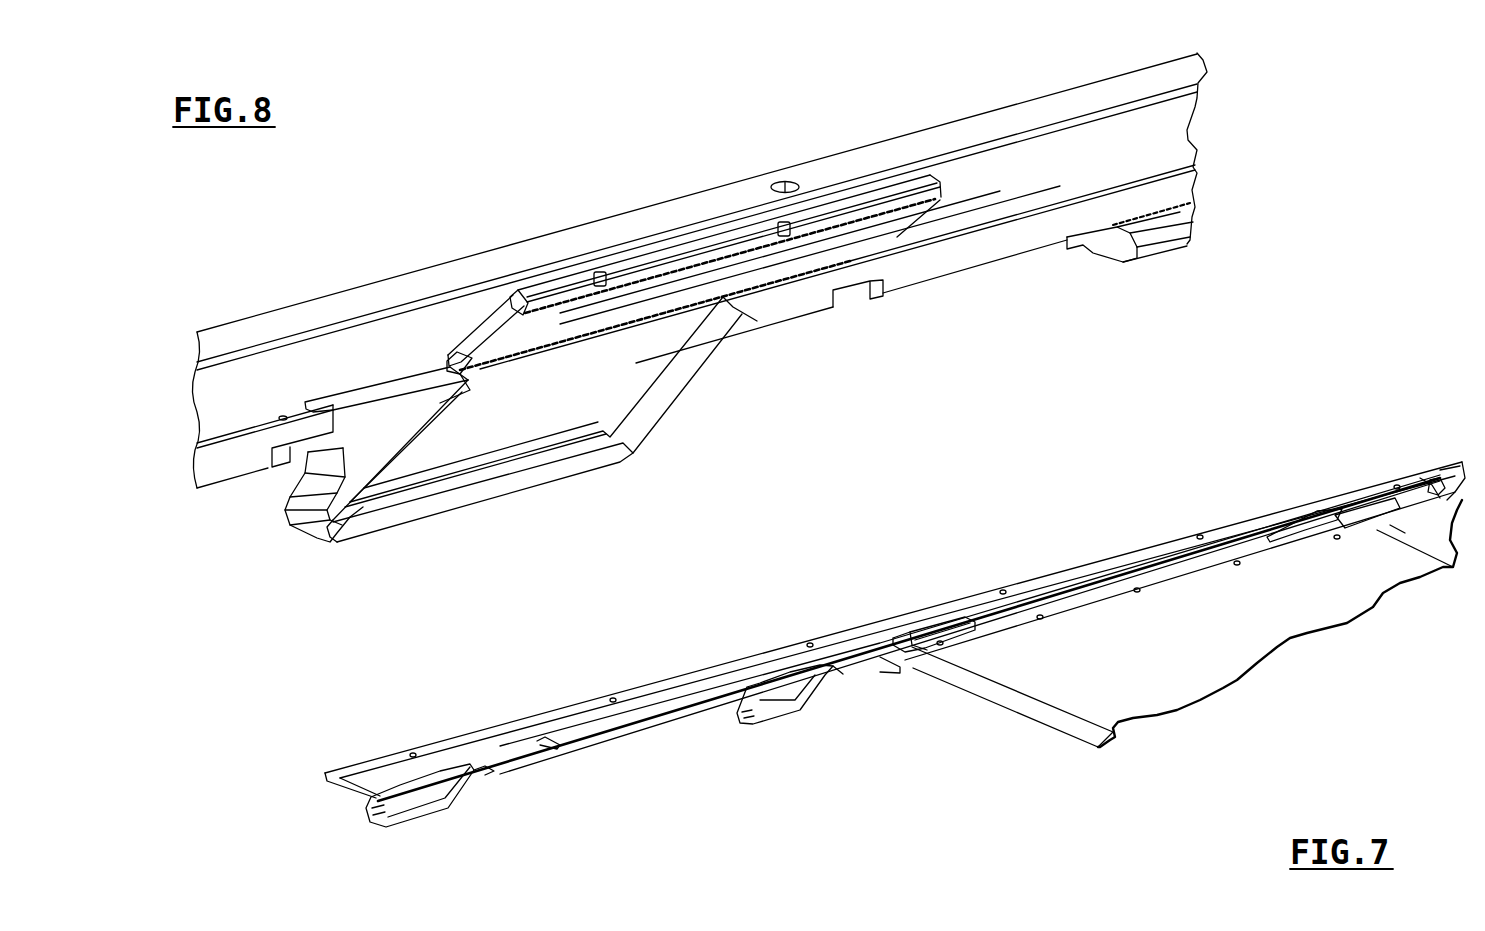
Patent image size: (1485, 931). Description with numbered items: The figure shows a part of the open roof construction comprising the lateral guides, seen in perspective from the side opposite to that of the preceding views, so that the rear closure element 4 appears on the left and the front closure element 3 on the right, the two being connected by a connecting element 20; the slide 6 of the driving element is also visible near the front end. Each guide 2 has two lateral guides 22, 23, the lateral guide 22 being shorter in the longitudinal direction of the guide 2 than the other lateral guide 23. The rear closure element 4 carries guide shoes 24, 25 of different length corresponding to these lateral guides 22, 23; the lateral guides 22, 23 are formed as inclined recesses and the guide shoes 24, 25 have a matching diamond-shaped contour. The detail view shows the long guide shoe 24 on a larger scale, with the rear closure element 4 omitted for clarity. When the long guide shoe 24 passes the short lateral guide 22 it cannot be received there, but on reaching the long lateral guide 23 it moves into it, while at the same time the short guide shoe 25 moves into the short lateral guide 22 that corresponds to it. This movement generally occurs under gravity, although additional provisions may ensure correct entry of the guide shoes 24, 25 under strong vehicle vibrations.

In FIG. 8, the guide 2 is at (280, 316).
In FIG. 7, the guide 2 is at (458, 735).
In FIG. 7, the front closure element 3 is at (1428, 527).
In FIG. 7, the rear closure element 4 is at (1207, 600).
In FIG. 7, the slide 6 is at (1447, 480).
In FIG. 7, the connecting element 20 is at (1378, 511).
In FIG. 8, the lateral guide 22 is at (478, 447).
In FIG. 7, the lateral guide 22 is at (783, 697).
In FIG. 7, the lateral guide 23 is at (443, 783).
In FIG. 8, the guide shoe 24 is at (738, 265).
In FIG. 7, the guide shoe 24 is at (908, 633).
In FIG. 7, the guide shoe 25 is at (1302, 525).